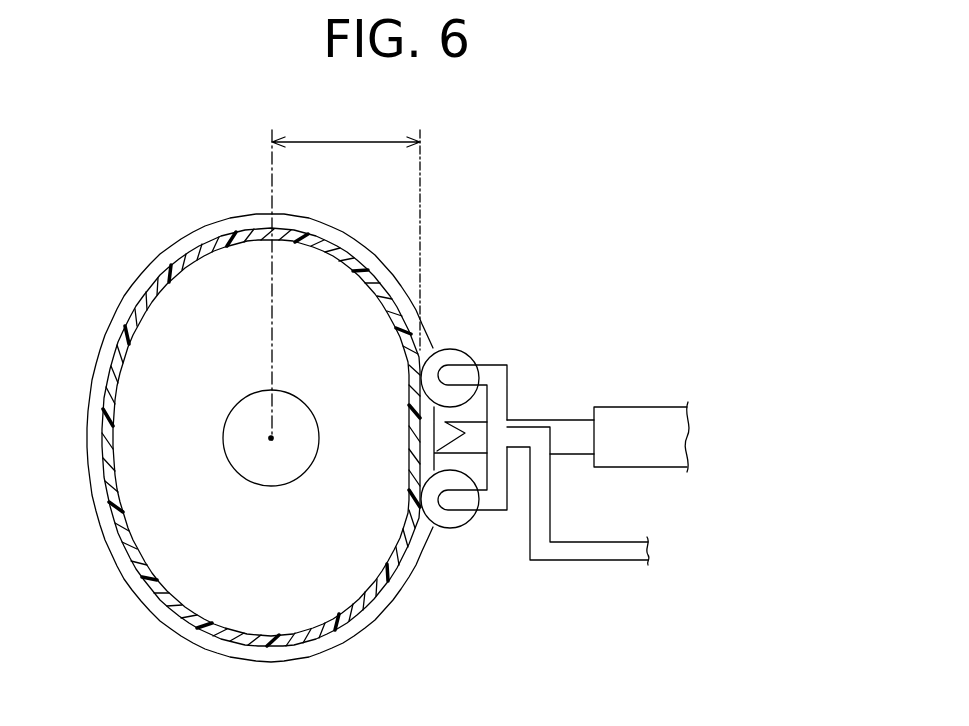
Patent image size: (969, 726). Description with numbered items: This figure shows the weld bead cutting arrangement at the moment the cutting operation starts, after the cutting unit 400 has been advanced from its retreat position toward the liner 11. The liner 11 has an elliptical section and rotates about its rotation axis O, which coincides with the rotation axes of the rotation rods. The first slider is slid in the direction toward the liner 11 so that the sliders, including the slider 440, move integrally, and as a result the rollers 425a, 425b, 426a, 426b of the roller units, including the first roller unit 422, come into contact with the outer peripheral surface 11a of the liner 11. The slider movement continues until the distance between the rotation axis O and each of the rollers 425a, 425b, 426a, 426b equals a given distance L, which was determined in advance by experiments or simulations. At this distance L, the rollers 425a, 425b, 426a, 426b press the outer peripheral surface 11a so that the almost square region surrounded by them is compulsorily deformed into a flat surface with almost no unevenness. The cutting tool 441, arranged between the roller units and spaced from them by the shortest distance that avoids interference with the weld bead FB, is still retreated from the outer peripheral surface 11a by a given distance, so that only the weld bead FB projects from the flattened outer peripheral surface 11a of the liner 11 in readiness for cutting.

The liner 11 is at (289, 429).
The outer peripheral surface of the liner 11a is at (390, 590).
The weld bead FB is at (355, 630).
The rotation axis of the liner O is at (271, 442).
The distance L is at (346, 273).
The cutting unit 400 is at (587, 443).
The roller 425a is at (504, 341).
The roller 426a is at (453, 349).
The roller 425b is at (505, 541).
The roller 426b is at (455, 528).
The cutting tool 441 is at (474, 434).
The first roller unit 422 is at (610, 537).
The slider 440 is at (657, 418).